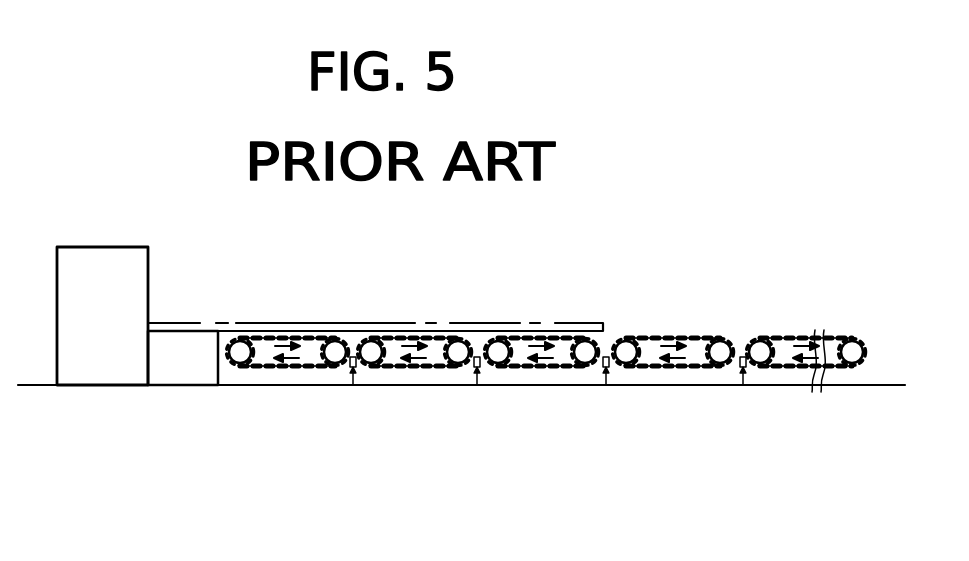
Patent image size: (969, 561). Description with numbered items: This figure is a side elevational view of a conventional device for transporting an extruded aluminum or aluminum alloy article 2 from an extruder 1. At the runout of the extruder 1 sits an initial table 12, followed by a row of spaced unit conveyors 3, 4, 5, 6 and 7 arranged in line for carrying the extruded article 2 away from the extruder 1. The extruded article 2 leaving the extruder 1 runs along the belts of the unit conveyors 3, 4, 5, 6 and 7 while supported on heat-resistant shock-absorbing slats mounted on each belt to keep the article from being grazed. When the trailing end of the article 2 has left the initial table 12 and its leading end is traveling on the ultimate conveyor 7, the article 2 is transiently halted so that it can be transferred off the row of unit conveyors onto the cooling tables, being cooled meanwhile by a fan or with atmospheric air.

The extruder 1 is at (101, 368).
The initial table 12 is at (197, 375).
The extruded article 2 is at (210, 325).
The unit conveyor 3 is at (305, 360).
The unit conveyor 4 is at (440, 357).
The unit conveyor 5 is at (562, 358).
The unit conveyor 6 is at (705, 357).
The ultimate conveyor 7 is at (817, 362).